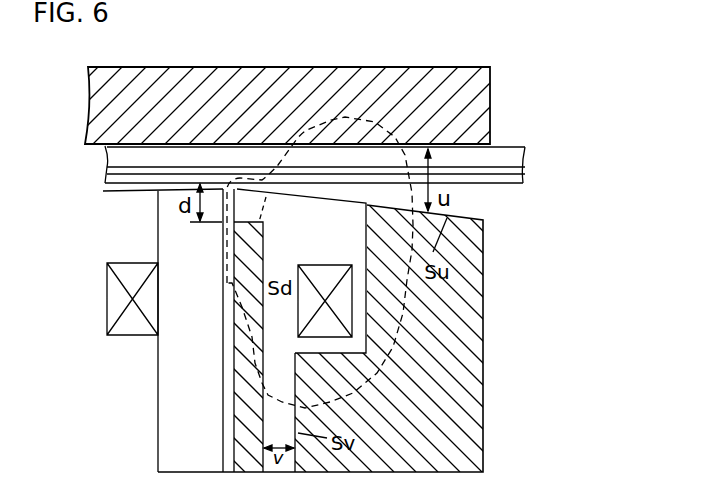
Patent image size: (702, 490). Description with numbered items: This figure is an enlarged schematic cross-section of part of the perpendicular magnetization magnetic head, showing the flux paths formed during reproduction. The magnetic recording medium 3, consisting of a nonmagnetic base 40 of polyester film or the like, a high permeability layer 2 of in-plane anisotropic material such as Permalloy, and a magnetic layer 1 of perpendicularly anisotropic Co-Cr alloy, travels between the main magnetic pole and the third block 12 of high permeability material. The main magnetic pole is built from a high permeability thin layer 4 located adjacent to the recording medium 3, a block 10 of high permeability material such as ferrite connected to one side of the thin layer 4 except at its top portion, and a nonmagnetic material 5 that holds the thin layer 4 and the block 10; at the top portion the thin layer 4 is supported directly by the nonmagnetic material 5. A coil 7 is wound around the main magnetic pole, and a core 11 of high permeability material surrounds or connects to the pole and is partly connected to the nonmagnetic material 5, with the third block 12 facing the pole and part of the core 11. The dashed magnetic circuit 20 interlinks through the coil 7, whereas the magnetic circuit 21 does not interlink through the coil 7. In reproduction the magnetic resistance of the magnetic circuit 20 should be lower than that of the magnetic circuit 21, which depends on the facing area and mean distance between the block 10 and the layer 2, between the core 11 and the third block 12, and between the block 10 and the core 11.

The third block 12 is at (384, 78).
The magnetic recording medium 3 is at (355, 166).
The nonmagnetic base 40 is at (523, 150).
The high permeability layer 2 is at (523, 168).
The magnetic layer 1 is at (336, 183).
The nonmagnetic material 5 is at (172, 398).
The coil 7 is at (128, 272).
The high permeability thin layer 4 is at (227, 342).
The block 10 is at (255, 314).
The core 11 is at (473, 325).
The magnetic circuit 20 is at (432, 336).
The magnetic circuit 21 is at (265, 200).